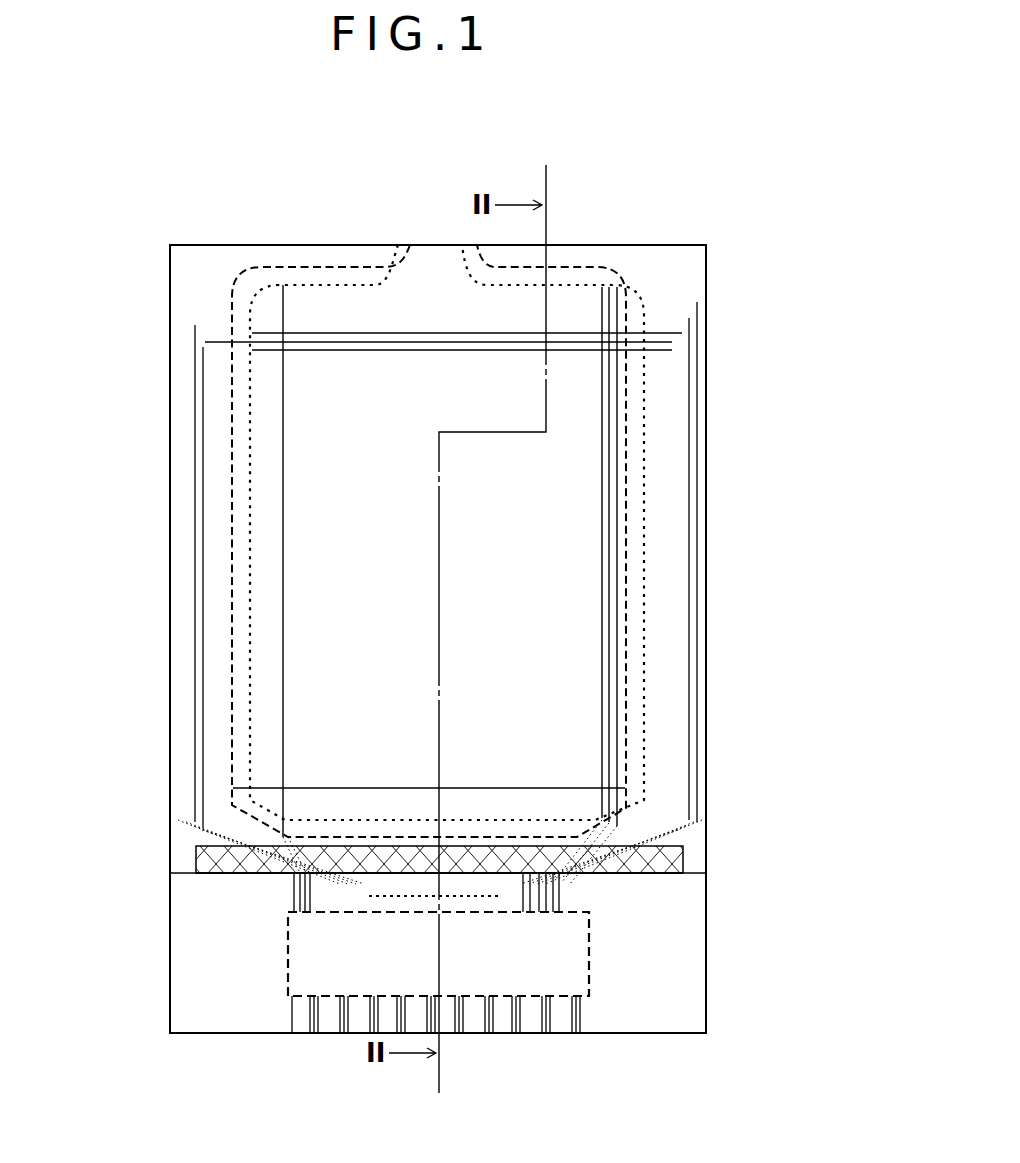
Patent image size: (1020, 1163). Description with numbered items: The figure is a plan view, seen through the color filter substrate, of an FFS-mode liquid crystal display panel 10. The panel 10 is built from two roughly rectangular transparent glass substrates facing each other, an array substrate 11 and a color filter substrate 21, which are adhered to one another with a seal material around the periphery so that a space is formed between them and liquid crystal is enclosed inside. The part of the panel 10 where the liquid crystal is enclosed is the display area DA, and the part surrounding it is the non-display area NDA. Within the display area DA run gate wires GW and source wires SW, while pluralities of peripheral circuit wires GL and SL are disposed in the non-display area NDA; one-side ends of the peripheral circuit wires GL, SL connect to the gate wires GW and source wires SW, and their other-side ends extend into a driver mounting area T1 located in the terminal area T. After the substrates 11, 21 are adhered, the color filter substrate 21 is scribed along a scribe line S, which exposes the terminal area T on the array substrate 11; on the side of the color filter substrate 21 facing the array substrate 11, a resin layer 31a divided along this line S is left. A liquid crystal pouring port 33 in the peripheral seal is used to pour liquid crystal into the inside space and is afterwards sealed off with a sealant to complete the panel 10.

The liquid crystal display panel 10 is at (108, 171).
The array substrate 11 is at (185, 1010).
The color filter substrate 21 is at (687, 833).
The resin layer 31a is at (200, 858).
The liquid crystal pouring port 33 is at (428, 245).
The scribe line S is at (692, 883).
The peripheral circuit wire GL is at (183, 613).
The source wire SW is at (268, 465).
The display area DA is at (548, 487).
The non-display area NDA is at (658, 387).
The gate wire GW is at (389, 300).
The peripheral circuit wire SL is at (250, 828).
The driver mounting area T1 is at (288, 975).
The terminal area T is at (645, 1012).